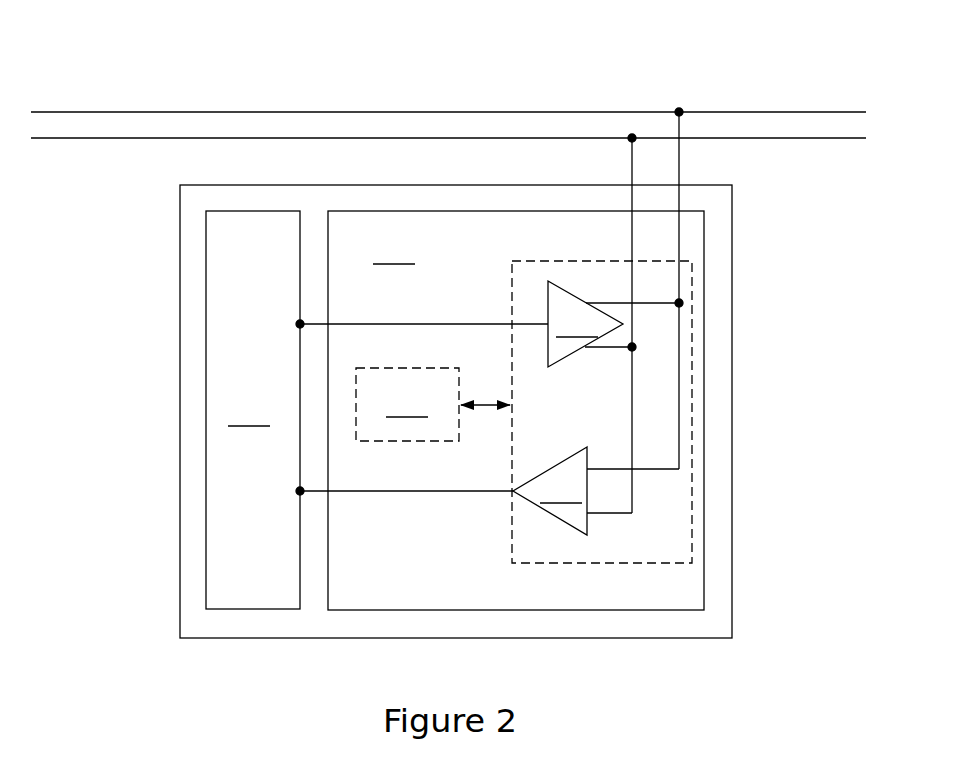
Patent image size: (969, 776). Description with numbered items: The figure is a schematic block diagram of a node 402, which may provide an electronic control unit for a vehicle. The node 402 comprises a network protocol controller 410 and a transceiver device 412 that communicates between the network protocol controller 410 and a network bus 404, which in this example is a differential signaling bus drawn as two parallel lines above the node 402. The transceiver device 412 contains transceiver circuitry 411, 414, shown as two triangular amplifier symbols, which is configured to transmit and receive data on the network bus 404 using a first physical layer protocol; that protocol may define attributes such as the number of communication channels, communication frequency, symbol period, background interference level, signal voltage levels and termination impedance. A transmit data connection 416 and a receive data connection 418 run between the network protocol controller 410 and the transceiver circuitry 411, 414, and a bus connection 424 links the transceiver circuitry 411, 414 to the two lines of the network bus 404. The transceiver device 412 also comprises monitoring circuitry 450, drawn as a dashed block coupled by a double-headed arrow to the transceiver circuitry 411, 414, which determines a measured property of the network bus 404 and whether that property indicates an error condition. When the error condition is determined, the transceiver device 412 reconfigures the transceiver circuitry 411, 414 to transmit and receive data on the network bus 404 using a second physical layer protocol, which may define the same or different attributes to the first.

The node 402 is at (180, 306).
The network bus 404 is at (197, 104).
The network protocol controller 410 is at (253, 410).
The transceiver circuitry 411 is at (585, 324).
The transceiver device 412 is at (516, 410).
The transceiver circuitry 414 is at (550, 491).
The transmit data line (TXD) 416 is at (294, 321).
The receive data line (RXD) 418 is at (295, 494).
The bus connection 424 is at (687, 129).
The monitoring circuitry 450 is at (433, 404).